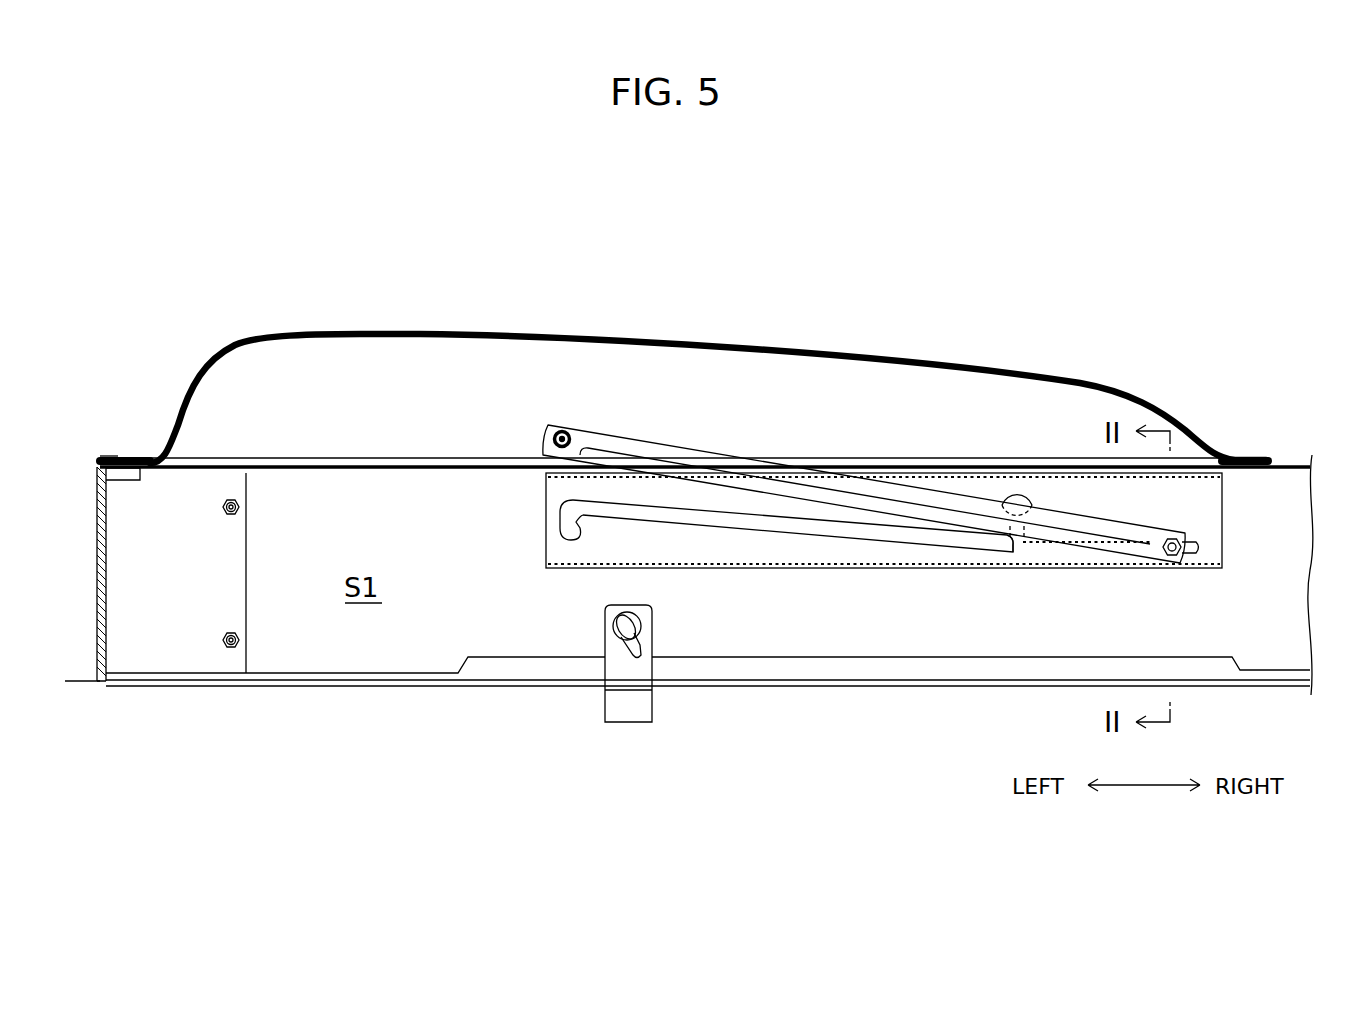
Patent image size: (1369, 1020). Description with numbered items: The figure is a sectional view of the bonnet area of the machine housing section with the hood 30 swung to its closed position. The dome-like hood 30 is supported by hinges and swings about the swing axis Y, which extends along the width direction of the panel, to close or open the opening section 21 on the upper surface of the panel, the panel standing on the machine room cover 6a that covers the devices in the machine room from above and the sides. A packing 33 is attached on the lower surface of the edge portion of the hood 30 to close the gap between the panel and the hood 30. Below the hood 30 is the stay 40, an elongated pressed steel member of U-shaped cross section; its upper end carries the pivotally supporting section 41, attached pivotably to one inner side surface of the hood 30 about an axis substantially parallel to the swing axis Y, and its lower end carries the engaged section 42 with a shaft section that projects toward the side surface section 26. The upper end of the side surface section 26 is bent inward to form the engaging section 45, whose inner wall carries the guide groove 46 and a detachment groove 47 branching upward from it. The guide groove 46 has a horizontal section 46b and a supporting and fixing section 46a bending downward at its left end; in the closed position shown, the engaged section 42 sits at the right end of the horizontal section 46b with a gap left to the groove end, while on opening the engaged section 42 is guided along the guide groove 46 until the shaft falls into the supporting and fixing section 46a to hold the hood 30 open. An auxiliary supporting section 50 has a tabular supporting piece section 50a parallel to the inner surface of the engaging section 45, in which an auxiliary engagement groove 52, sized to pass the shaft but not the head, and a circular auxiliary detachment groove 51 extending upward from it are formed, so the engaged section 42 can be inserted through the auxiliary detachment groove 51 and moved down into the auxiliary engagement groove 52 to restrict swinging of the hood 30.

The hood 30 is at (525, 333).
The packing 33 is at (1270, 456).
The opening section 21 is at (170, 465).
The swing axis Y is at (104, 456).
The side surface section 26 is at (1298, 545).
The machine room cover 6a is at (73, 681).
The engaging section 45 is at (550, 548).
The stay 40 is at (655, 445).
The pivotally supporting section 41 is at (553, 438).
The engaged section 42 is at (1198, 548).
The detachment groove 47 is at (1015, 494).
The guide groove 46 is at (868, 548).
The supporting and fixing section 46a is at (560, 519).
The horizontal section 46b is at (1028, 556).
The auxiliary supporting section 50 is at (630, 708).
The auxiliary detachment groove 51 is at (641, 618).
The auxiliary engagement groove 52 is at (637, 655).
The supporting piece section 50a is at (640, 675).